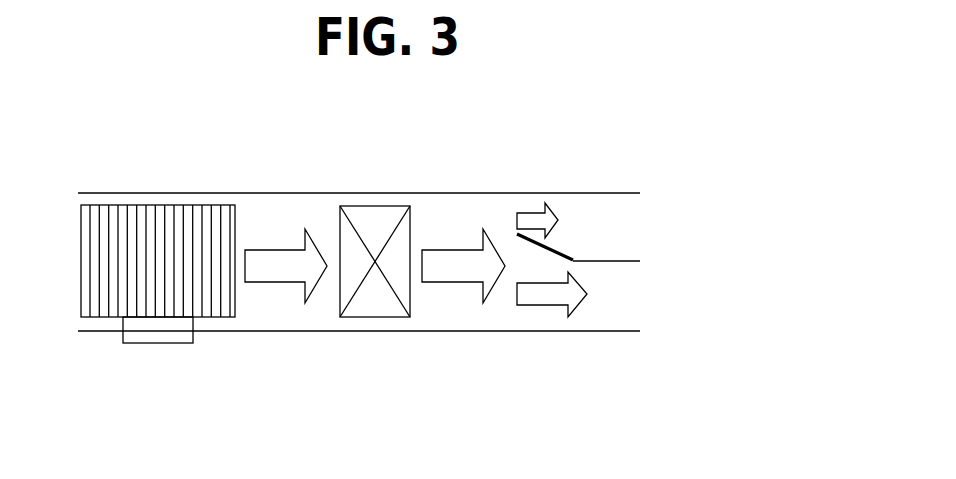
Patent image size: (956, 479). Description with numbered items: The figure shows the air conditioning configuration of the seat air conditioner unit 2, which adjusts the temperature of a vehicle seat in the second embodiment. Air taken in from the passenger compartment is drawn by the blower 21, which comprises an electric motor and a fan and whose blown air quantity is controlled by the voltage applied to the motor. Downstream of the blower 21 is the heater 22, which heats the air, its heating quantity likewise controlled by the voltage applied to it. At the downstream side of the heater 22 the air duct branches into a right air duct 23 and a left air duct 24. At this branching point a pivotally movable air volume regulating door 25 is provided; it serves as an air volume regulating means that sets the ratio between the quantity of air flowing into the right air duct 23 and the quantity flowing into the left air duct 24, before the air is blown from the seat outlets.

The seat air conditioner unit 2 is at (274, 186).
The blower 21 is at (162, 205).
The heater 22 is at (368, 206).
The right air duct 23 is at (587, 215).
The left air duct 24 is at (607, 320).
The air volume regulating door 25 is at (517, 234).